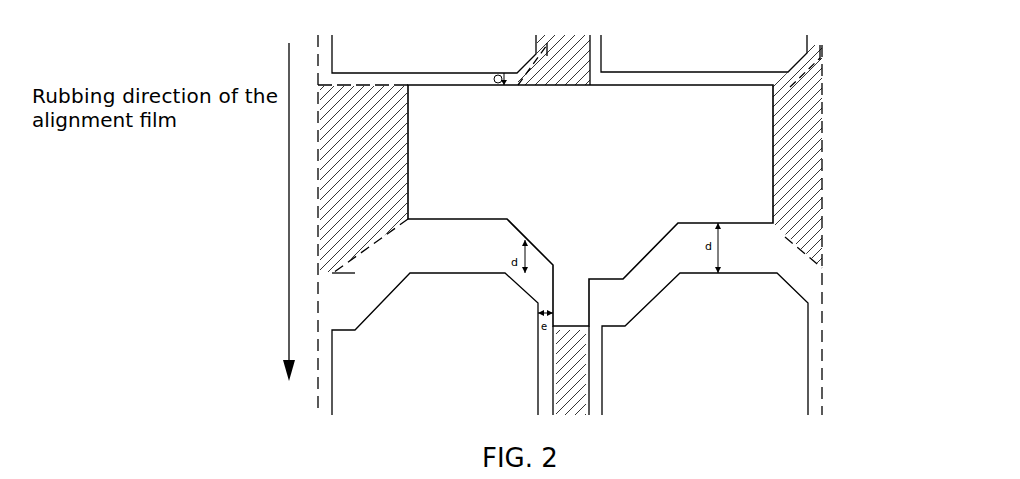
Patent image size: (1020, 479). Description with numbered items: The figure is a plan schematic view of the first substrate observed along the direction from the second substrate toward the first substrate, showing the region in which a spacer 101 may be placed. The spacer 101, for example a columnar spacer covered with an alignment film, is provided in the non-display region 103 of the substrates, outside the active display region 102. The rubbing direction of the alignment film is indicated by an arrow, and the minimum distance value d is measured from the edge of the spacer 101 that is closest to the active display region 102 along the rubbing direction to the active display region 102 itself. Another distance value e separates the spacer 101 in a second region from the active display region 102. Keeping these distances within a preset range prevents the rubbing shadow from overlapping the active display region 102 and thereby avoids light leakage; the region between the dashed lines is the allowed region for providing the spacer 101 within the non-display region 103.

The spacer 101 is at (773, 157).
The active display region 102 is at (512, 35).
The non-display region 103 is at (783, 187).